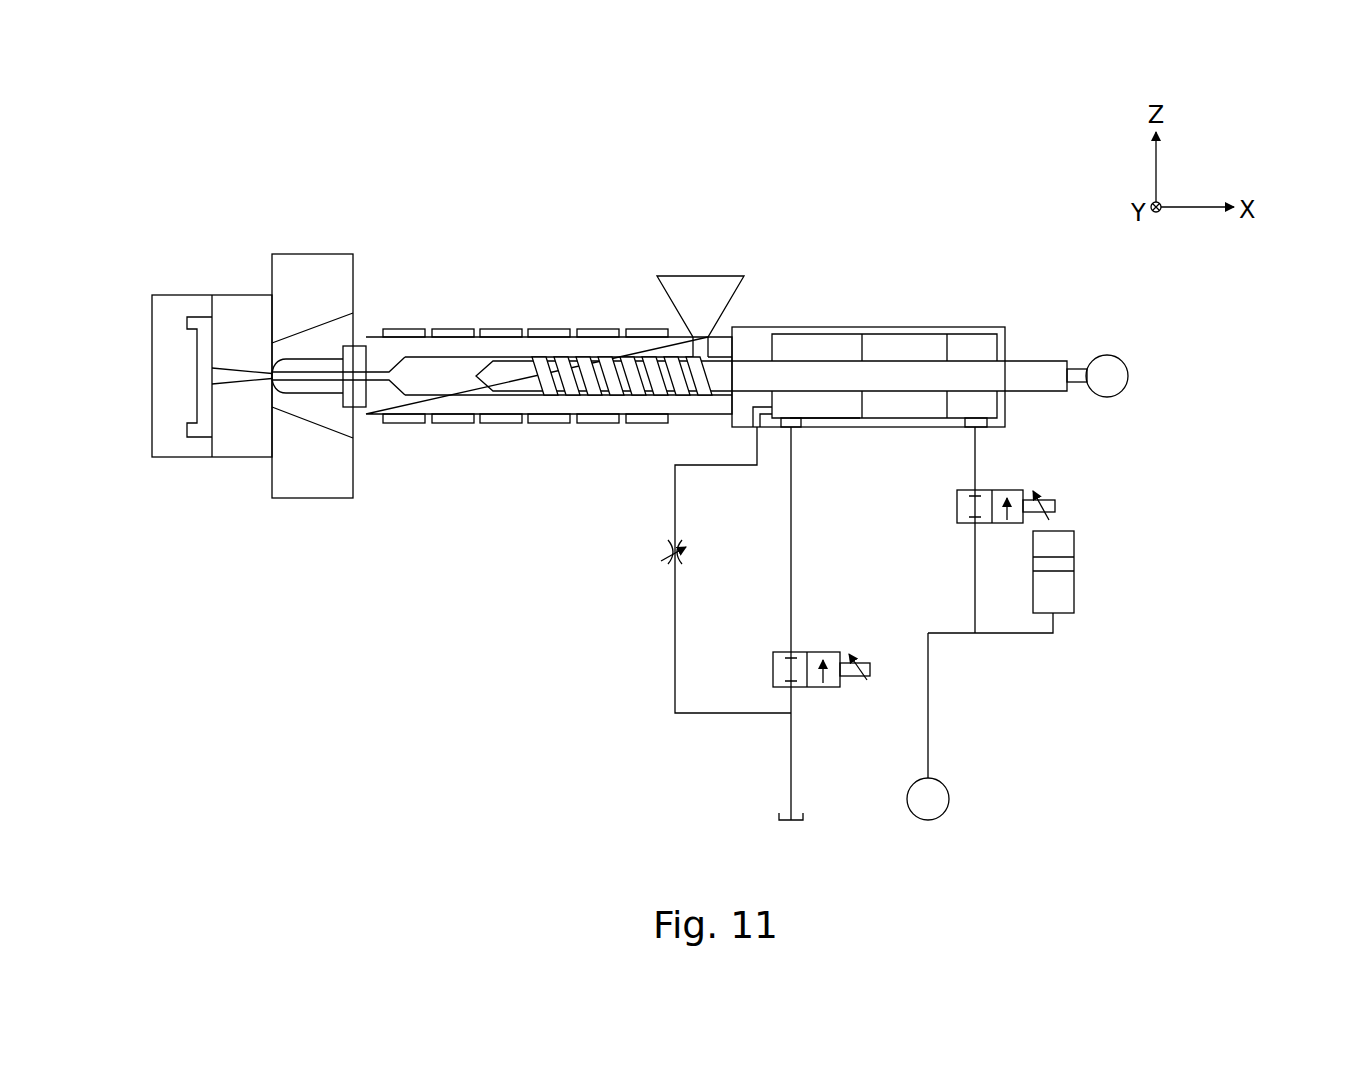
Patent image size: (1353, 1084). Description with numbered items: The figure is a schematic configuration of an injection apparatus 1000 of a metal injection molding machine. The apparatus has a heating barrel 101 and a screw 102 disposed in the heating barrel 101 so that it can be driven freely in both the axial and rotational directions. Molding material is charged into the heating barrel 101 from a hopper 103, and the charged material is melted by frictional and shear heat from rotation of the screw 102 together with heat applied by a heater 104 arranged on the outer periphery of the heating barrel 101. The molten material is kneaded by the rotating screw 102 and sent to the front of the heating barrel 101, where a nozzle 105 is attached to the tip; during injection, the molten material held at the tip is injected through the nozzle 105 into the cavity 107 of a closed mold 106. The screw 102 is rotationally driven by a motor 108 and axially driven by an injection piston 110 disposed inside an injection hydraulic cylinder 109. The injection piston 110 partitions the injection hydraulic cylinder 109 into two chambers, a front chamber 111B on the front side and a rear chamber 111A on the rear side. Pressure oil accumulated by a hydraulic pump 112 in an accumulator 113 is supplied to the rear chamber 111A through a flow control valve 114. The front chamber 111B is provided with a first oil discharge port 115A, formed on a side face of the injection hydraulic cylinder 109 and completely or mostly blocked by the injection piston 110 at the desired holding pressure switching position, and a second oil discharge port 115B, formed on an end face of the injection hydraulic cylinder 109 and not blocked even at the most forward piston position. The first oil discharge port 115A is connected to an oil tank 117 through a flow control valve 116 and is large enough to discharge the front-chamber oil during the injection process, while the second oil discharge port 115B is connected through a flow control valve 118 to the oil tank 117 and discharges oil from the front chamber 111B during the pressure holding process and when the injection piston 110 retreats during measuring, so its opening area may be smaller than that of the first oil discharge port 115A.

The injection apparatus 1000 is at (676, 141).
The heating barrel 101 is at (413, 405).
The screw 102 is at (553, 393).
The hopper 103 is at (703, 283).
The heater 104 is at (457, 328).
The nozzle 105 is at (322, 358).
The mold 106 is at (165, 298).
The cavity 107 is at (200, 430).
The motor 108 is at (1108, 356).
The injection hydraulic cylinder 109 is at (984, 326).
The injection piston 110 is at (900, 346).
The rear chamber 111A is at (998, 411).
The front chamber 111B is at (851, 422).
The hydraulic pump 112 is at (948, 789).
The accumulator 113 is at (1075, 585).
The flow control valve 114 is at (1057, 503).
The first oil discharge port 115A is at (797, 430).
The second oil discharge port 115B is at (766, 430).
The flow control valve 116 is at (816, 652).
The oil tank 117 is at (779, 818).
The flow control valve 118 is at (664, 552).